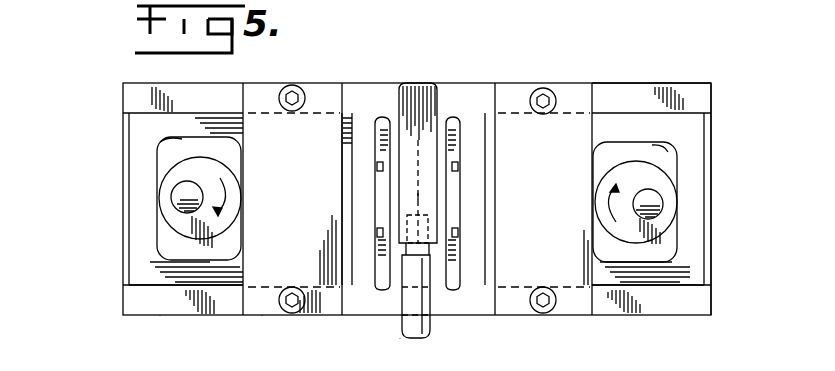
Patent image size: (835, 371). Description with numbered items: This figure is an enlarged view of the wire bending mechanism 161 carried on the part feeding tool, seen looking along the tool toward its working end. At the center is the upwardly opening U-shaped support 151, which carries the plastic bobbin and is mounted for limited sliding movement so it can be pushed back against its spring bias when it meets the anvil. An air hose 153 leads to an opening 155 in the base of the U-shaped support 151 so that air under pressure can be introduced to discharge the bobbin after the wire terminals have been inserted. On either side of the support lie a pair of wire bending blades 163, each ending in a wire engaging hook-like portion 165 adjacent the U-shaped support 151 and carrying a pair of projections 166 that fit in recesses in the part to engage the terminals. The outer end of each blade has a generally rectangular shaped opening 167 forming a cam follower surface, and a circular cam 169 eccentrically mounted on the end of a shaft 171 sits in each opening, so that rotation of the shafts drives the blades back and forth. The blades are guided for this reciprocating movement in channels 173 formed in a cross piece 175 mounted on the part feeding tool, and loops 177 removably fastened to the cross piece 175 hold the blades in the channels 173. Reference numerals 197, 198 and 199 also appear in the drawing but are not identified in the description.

The U-shaped support 151 is at (429, 87).
The air hose 153 is at (402, 333).
The opening 155 is at (417, 184).
The wire bending mechanism 161 is at (113, 293).
The wire bending blade 163 is at (200, 283).
The hook-like portion 165 is at (383, 118).
The projection 166 is at (377, 166).
The rectangular shaped opening 167 is at (175, 157).
The circular cam 169 is at (178, 228).
The shaft 171 is at (180, 197).
The channel 173 is at (662, 118).
The cross piece 175 is at (706, 106).
The loop 177 is at (278, 66).
The lower member 197 is at (262, 343).
The lower member 198 is at (397, 354).
The lower member 199 is at (157, 343).